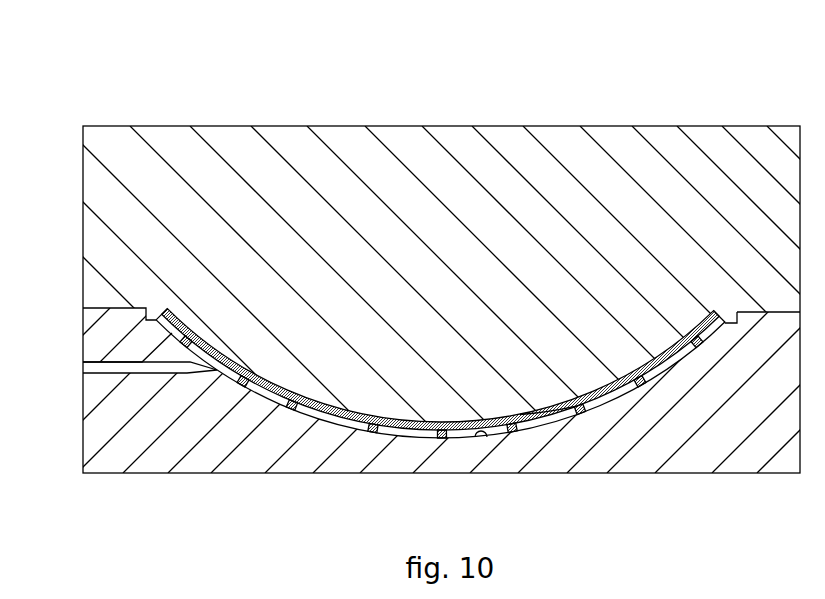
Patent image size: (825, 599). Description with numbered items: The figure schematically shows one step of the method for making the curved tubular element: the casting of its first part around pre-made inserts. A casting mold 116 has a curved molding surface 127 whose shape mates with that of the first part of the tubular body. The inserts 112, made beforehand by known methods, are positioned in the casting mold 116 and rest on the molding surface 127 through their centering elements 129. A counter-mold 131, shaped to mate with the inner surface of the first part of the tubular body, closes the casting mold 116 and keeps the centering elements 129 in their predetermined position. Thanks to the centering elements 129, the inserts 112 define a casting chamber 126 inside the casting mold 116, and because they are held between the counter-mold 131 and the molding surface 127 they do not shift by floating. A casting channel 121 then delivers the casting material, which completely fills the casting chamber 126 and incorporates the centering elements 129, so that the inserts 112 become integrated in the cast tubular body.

The casting mold 116 is at (435, 95).
The counter-mold 131 is at (293, 148).
The casting channel 121 is at (90, 368).
The inserts 112 is at (283, 403).
The centering elements 129 is at (443, 433).
The curved molding surface 127 is at (481, 437).
The casting chamber 126 is at (545, 422).